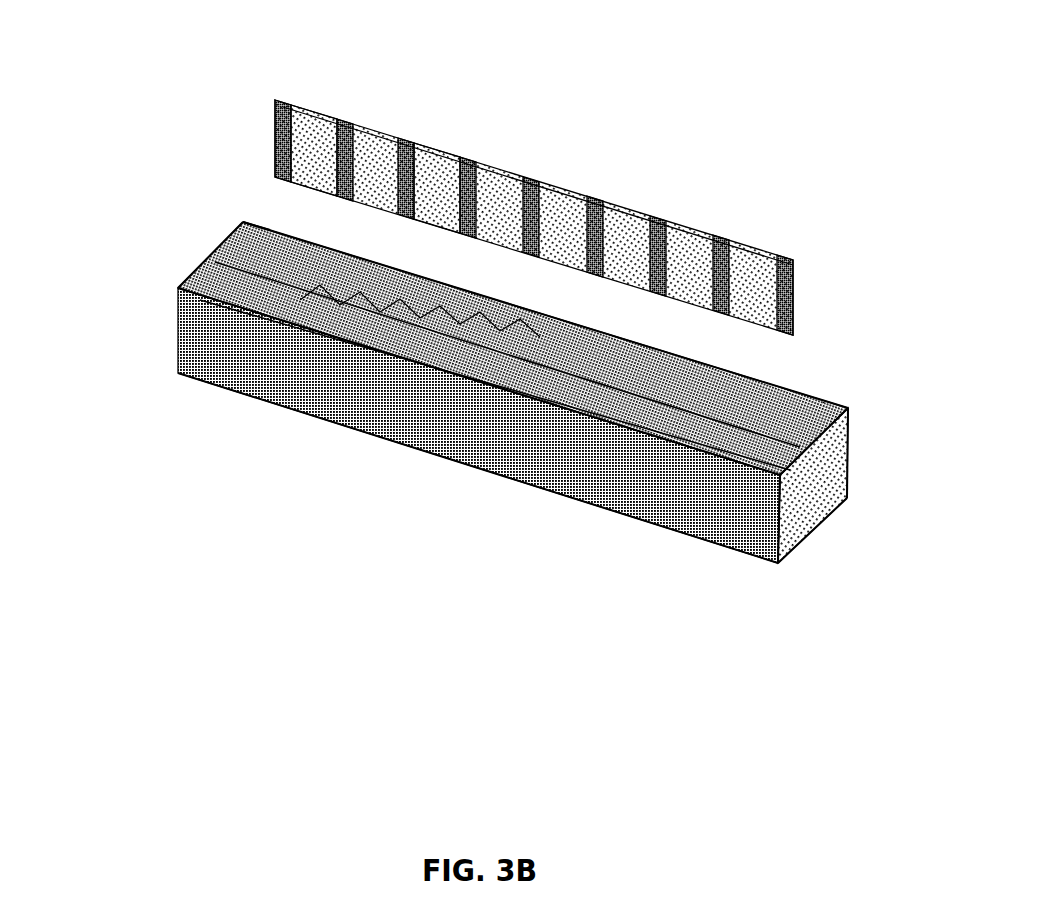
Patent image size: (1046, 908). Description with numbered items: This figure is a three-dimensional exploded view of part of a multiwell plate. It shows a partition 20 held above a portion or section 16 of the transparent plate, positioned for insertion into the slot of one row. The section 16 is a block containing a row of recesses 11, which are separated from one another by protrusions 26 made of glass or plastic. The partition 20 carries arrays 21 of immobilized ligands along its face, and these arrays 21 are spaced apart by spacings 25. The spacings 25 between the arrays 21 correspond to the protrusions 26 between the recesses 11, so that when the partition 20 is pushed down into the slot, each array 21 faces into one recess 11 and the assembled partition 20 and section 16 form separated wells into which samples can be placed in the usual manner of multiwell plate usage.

The recesses 11 is at (217, 128).
The section of plate 16 is at (446, 392).
The partition 20 is at (610, 180).
The arrays of immobilized molecules 21 is at (393, 129).
The spacings 25 is at (534, 203).
The protrusions 26 is at (500, 397).